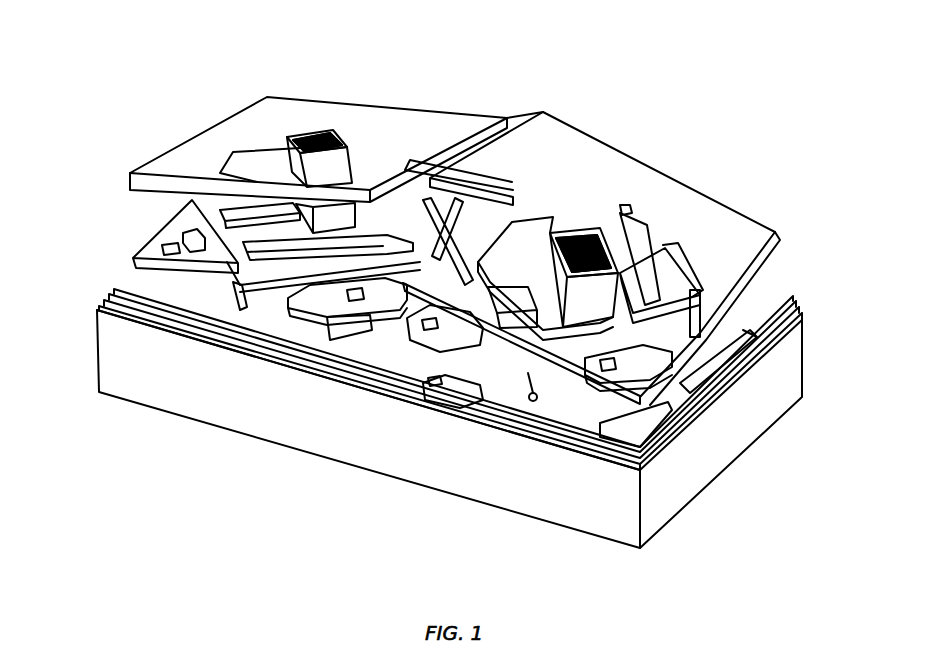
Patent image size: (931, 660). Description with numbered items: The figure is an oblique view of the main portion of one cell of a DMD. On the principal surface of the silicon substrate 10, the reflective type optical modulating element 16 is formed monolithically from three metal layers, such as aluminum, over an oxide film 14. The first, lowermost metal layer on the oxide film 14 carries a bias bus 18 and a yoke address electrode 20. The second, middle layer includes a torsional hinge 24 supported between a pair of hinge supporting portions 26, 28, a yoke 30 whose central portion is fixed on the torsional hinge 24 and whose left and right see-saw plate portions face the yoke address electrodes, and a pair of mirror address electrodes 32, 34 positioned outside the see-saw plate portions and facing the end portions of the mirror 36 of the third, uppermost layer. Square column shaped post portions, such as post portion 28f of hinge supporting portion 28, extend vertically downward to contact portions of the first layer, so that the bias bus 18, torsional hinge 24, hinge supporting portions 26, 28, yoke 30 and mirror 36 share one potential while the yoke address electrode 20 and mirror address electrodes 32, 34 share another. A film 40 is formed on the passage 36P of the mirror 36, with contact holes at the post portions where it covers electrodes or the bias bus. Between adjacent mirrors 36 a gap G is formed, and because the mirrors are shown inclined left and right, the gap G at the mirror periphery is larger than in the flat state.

The silicon substrate 10 is at (693, 478).
The oxide film 14 is at (130, 320).
The reflective type optical modulating element 16 is at (105, 172).
The bias bus 18 is at (123, 283).
The yoke address electrode 20 is at (248, 335).
The torsional hinge 24 is at (228, 248).
The hinge supporting portion 26 is at (170, 225).
The hinge supporting portion 28 is at (457, 177).
The post portion 28f is at (800, 320).
The yoke 30 is at (225, 212).
The mirror address electrode 32 is at (275, 340).
The mirror address electrode 34 is at (270, 160).
The mirror 36 is at (227, 132).
The passage of mirror 36P is at (323, 133).
The film 40 is at (307, 140).
The gap G is at (513, 130).